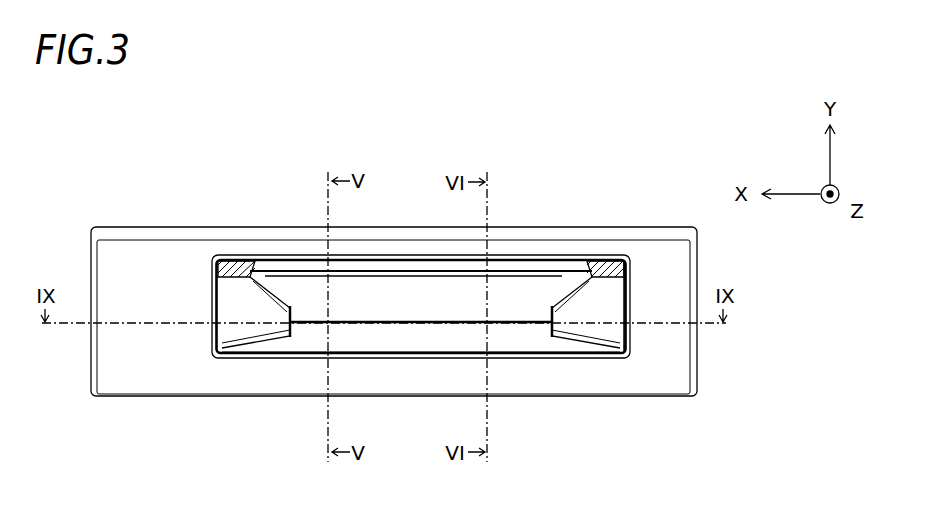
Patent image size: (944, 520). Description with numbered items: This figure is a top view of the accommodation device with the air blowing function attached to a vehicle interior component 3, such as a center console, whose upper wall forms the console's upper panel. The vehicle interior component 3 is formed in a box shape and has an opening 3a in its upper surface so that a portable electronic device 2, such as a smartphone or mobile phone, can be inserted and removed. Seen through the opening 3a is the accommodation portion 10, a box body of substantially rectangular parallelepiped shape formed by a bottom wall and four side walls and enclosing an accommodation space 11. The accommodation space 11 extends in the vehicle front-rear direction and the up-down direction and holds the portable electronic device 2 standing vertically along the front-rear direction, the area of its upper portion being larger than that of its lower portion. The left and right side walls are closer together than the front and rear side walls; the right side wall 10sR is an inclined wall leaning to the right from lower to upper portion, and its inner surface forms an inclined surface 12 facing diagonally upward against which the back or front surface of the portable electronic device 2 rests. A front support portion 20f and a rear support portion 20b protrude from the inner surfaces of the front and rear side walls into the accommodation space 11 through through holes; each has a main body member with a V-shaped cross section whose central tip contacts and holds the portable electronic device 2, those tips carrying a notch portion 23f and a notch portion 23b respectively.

The vehicle interior component 3 is at (170, 258).
The opening 3a is at (238, 257).
The inclined surface 12 is at (250, 261).
The notch portion 23f is at (288, 262).
The portable electronic device 2 is at (390, 286).
The notch portion 23b is at (552, 262).
The side wall 10sR is at (612, 256).
The front support portion 20f is at (233, 352).
The accommodation space 11 is at (300, 342).
The accommodation portion 10 is at (520, 342).
The rear support portion 20b is at (610, 352).